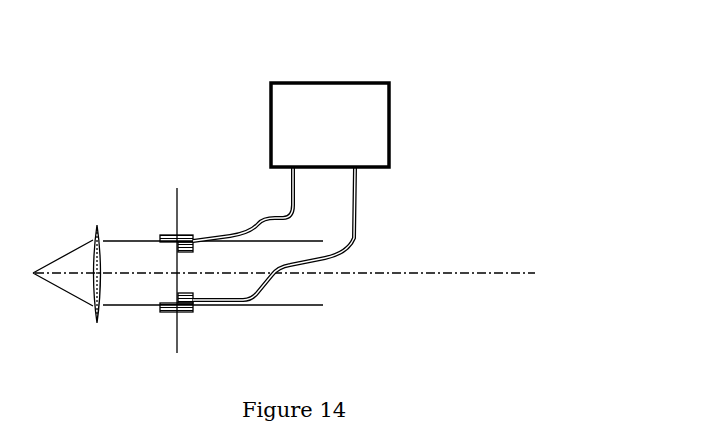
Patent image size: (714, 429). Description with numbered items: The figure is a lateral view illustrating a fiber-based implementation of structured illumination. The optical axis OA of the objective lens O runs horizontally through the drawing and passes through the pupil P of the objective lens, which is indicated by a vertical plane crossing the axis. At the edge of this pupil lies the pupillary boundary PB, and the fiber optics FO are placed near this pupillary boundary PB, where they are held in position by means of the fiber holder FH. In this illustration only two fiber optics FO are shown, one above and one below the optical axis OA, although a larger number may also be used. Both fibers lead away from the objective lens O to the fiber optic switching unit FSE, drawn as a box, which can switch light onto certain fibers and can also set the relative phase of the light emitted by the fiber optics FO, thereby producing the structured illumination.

The objective lens O is at (92, 234).
The optical axis OA is at (455, 277).
The pupil P is at (174, 338).
The pupillary boundary PB is at (161, 231).
The fiber holder FH is at (195, 291).
The fiber optics FO is at (361, 207).
The fiber optic switching unit FSE is at (325, 104).